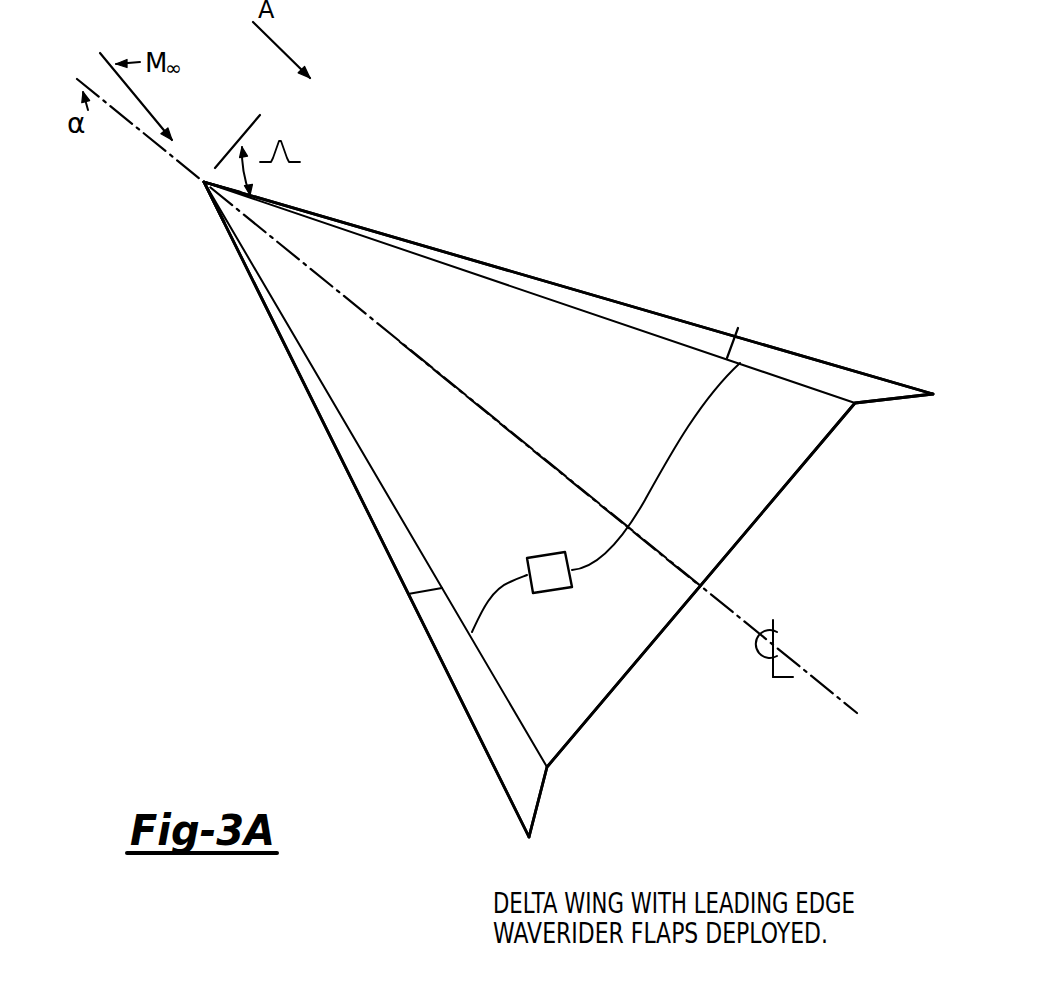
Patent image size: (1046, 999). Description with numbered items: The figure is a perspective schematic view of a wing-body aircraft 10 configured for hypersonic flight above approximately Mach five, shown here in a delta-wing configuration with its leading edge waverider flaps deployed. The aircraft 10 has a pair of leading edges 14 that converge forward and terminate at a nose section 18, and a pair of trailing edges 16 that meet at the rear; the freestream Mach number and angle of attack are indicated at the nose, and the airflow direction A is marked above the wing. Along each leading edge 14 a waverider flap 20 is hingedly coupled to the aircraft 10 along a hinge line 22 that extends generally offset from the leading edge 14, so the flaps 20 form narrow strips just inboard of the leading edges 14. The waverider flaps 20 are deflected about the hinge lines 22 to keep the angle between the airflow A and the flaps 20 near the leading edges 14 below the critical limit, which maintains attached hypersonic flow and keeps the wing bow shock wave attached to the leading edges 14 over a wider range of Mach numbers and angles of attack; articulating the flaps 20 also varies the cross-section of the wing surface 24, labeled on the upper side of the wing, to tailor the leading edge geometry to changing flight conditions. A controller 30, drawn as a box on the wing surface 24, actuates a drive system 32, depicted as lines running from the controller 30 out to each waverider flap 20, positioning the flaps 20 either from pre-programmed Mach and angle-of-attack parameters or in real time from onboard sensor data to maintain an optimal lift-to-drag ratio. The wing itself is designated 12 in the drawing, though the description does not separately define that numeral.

The wing-body aircraft 10 is at (672, 167).
The delta wing 12 is at (642, 372).
The leading edges 14 is at (320, 418).
The trailing edges 16 is at (623, 680).
The nose section 18 is at (204, 182).
The waverider flaps 20 is at (373, 493).
The hinge lines 22 is at (407, 597).
The wing surface 24 is at (545, 378).
The controller 30 is at (545, 550).
The drive system 32 is at (700, 400).